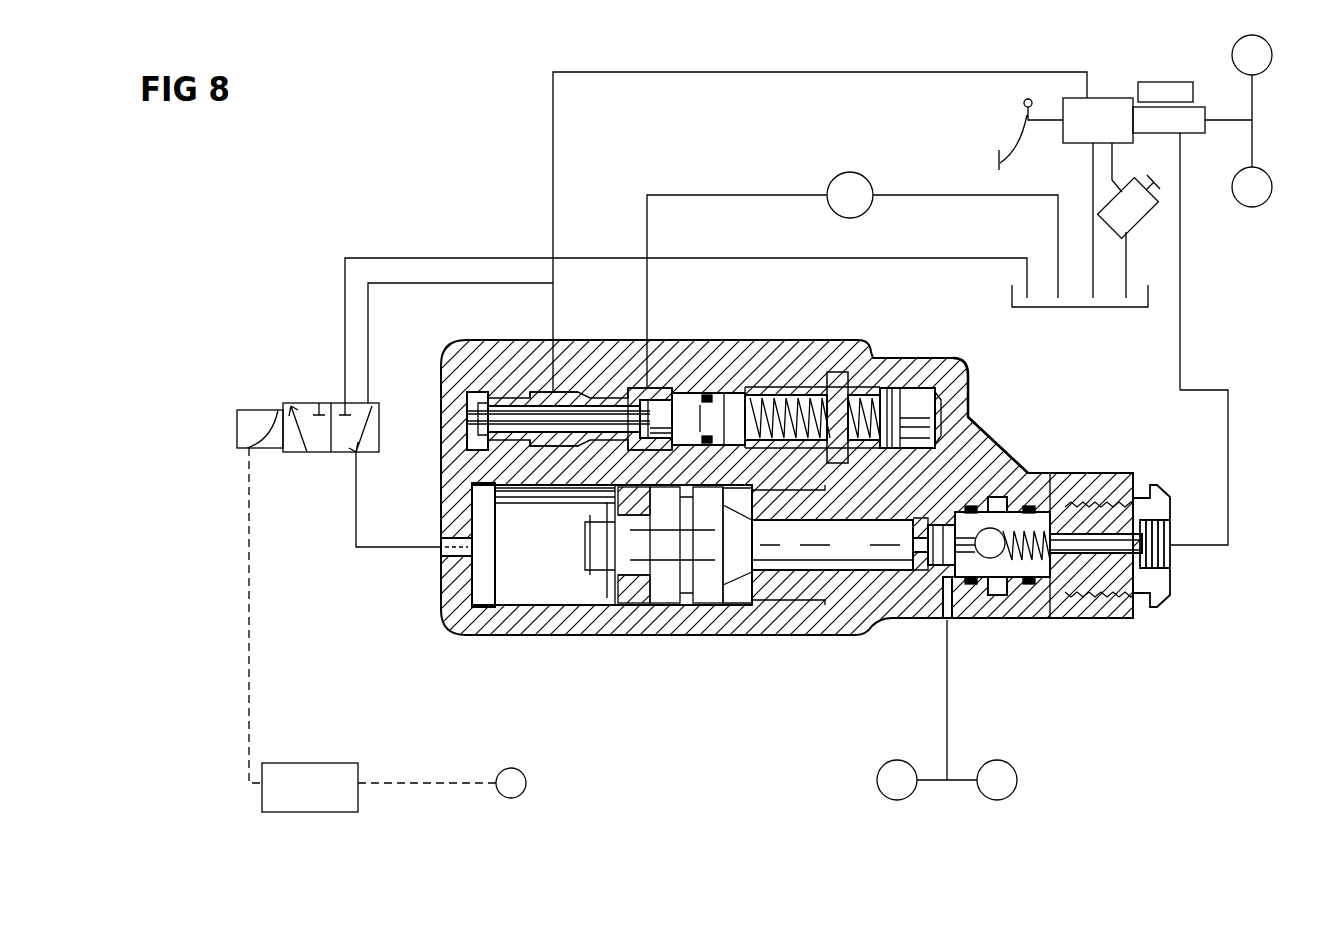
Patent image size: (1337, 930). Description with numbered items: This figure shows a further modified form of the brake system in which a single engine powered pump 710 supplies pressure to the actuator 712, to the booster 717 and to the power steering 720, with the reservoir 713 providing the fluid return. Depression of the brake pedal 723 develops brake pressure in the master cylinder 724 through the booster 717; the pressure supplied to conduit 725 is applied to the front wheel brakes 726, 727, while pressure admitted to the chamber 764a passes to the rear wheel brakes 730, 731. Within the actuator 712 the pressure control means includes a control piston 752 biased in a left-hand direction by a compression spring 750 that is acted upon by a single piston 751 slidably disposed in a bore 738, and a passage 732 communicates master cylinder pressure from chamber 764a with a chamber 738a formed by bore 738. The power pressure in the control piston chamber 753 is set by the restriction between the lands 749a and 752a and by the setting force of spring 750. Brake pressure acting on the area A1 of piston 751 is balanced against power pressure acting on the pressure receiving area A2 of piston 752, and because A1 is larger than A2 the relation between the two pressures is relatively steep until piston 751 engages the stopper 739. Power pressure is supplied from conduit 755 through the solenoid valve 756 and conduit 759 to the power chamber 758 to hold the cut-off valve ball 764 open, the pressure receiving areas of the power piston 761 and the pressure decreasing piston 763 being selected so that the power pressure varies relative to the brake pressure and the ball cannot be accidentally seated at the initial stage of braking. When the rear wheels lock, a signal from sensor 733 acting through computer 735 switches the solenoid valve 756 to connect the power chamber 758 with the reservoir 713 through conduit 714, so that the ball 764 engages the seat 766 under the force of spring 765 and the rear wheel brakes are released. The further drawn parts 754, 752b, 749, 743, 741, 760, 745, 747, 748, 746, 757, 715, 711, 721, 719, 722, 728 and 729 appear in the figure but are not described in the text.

The actuator 712 is at (1010, 395).
The chamber 738a is at (962, 372).
The passage 732 is at (972, 458).
The end plug 754 is at (472, 392).
The control piston chamber 753 is at (472, 415).
The control piston 752 is at (495, 440).
The tube bore 752b is at (645, 419).
The land 752a is at (640, 388).
The sleeve 749 is at (515, 392).
The land 749a is at (600, 392).
The passage 743 is at (553, 360).
The passage 741 is at (655, 370).
The pressure receiving area of piston 752 A2 is at (708, 419).
The stopper 739 is at (820, 390).
The bore 738 is at (838, 375).
The compression spring 750 is at (868, 393).
The piston 751 is at (915, 388).
The pressure receiving area of piston 751 A1 is at (912, 418).
The piston 760 is at (500, 600).
The power chamber 758 is at (558, 563).
The power piston 761 is at (650, 605).
The cylinder bore 745 is at (588, 620).
The pressure decreasing piston 763 is at (852, 545).
The seal ring 747 is at (940, 612).
The chamber 764a is at (998, 510).
The cut-off valve ball 764 is at (990, 560).
The spring 765 is at (1030, 585).
The seat 766 is at (955, 620).
The threaded boss 748 is at (1112, 472).
The nut 746 is at (1172, 555).
The inlet passage 757 is at (452, 554).
The conduit 715 is at (806, 74).
The conduit 755 is at (420, 285).
The conduit 714 is at (950, 258).
The conduit 711 is at (700, 196).
The engine powered pump 710 is at (832, 178).
The reservoir 713 is at (1100, 308).
The booster 717 is at (1100, 112).
The master cylinder 724 is at (1188, 134).
The conduit 725 is at (1222, 120).
The front wheel brake 726 is at (1270, 45).
The front wheel brake 727 is at (1270, 200).
The brake pedal 723 is at (1008, 140).
The return line 721 is at (1092, 180).
The line 719 is at (1113, 162).
The power steering 720 is at (1140, 220).
The return line 722 is at (1128, 280).
The conduit 728 is at (1228, 490).
The conduit 729 is at (946, 695).
The rear wheel brake 730 is at (878, 766).
The rear wheel brake 731 is at (1010, 766).
The solenoid valve 756 is at (320, 452).
The conduit 759 is at (356, 515).
The computer 735 is at (320, 763).
The sensor 733 is at (515, 770).